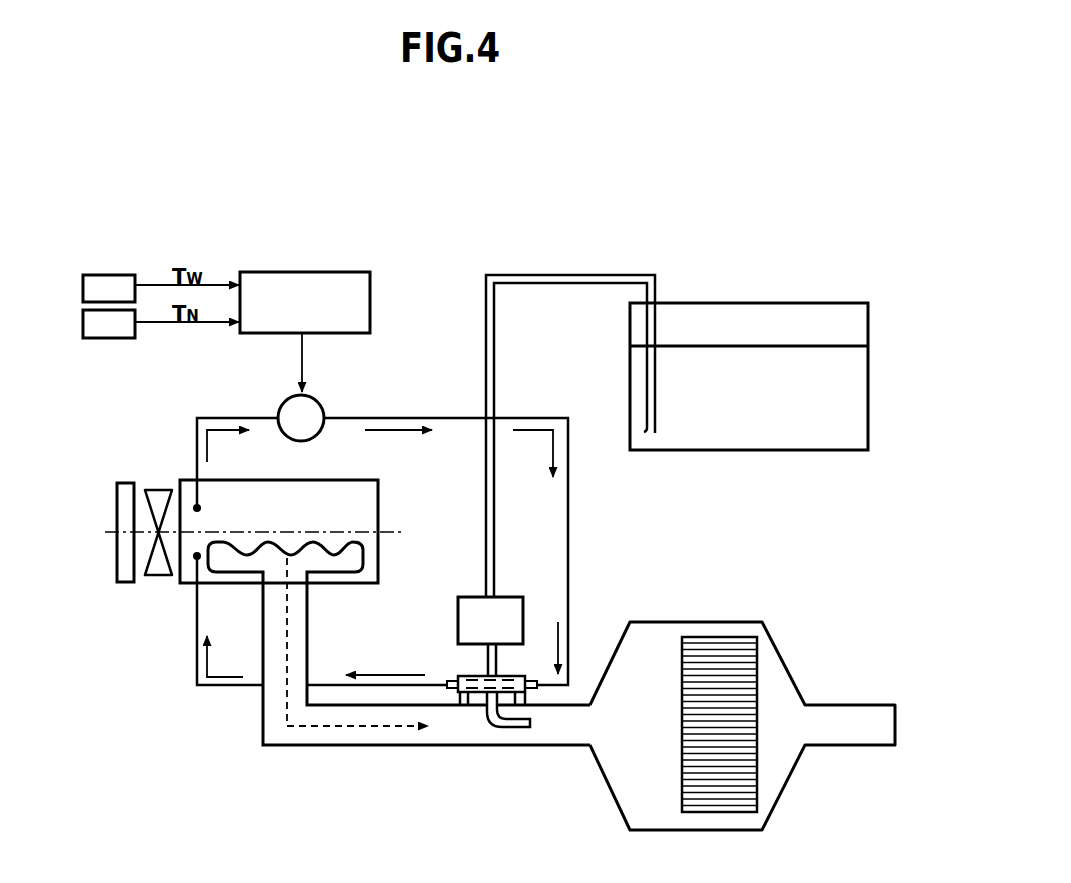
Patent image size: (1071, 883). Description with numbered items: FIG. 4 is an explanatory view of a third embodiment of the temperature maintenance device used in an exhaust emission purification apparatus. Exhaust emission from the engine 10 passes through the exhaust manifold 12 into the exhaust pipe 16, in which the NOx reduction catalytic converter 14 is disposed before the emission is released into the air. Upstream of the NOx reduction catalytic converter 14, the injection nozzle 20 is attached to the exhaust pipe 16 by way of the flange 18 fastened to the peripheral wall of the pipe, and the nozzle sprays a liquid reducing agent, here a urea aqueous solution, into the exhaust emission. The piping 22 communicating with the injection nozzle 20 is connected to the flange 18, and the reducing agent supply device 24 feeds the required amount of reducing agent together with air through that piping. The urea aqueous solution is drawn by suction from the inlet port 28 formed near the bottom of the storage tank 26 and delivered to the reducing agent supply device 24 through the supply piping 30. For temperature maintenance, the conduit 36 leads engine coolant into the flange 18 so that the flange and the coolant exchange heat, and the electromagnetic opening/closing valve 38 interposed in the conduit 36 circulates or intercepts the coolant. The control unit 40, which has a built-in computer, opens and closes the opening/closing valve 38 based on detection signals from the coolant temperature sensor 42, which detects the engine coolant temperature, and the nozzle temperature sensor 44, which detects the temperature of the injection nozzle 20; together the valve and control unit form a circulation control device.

The engine 10 is at (352, 484).
The exhaust manifold 12 is at (362, 562).
The NOx reduction catalytic converter 14 is at (731, 650).
The exhaust pipe 16 is at (388, 748).
The flange 18 is at (503, 675).
The injection nozzle 20 is at (518, 733).
The piping 22 is at (486, 665).
The reducing agent supply device 24 is at (511, 598).
The storage tank 26 is at (868, 318).
The inlet port 28 is at (636, 431).
The supply piping 30 is at (564, 276).
The conduit 36 is at (440, 418).
The electromagnetic opening/closing valve 38 is at (322, 401).
The control unit 40 is at (349, 273).
The coolant temperature sensor 42 is at (83, 289).
The nozzle temperature sensor 44 is at (83, 325).